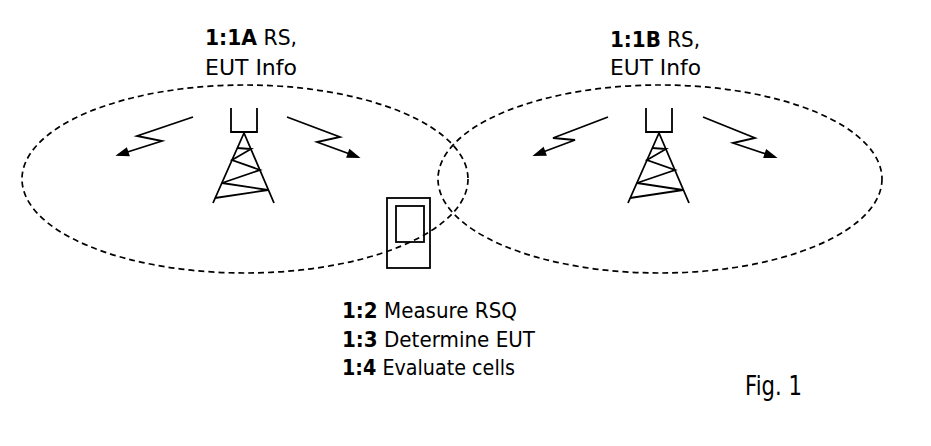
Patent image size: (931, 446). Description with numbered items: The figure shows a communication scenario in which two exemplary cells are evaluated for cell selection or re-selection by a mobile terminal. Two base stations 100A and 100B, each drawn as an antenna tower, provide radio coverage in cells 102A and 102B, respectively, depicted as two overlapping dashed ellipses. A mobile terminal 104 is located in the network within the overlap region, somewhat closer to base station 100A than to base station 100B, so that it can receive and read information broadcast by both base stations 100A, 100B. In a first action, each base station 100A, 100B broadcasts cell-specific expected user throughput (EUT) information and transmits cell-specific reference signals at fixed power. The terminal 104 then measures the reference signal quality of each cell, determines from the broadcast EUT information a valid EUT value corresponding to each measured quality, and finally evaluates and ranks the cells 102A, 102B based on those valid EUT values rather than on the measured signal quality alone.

The base station 100A is at (258, 158).
The base station 100B is at (673, 158).
The cell 102A is at (342, 95).
The cell 102B is at (782, 100).
The mobile terminal 104 is at (432, 245).